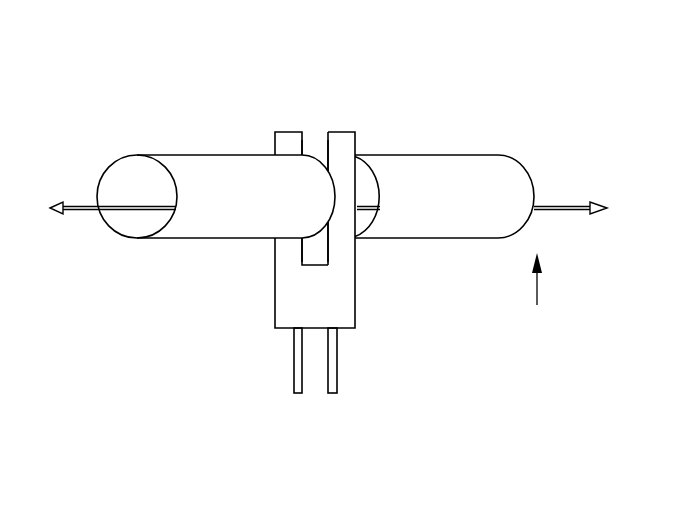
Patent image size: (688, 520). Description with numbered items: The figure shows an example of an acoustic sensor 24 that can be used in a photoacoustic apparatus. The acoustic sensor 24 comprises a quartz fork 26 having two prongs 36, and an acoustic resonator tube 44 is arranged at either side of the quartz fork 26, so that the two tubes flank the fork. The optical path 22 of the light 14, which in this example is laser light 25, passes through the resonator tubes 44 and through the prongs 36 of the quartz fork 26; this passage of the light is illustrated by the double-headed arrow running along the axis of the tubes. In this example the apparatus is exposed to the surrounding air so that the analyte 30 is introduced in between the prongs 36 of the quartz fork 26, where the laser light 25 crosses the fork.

The acoustic sensor 24 is at (392, 60).
The quartz fork 26 is at (355, 315).
The prongs 36 is at (340, 130).
The acoustic resonator tube 44 is at (202, 167).
The analyte 30 is at (243, 266).
The light 14 is at (565, 207).
The optical path 22 is at (482, 208).
The laser light 25 is at (537, 294).